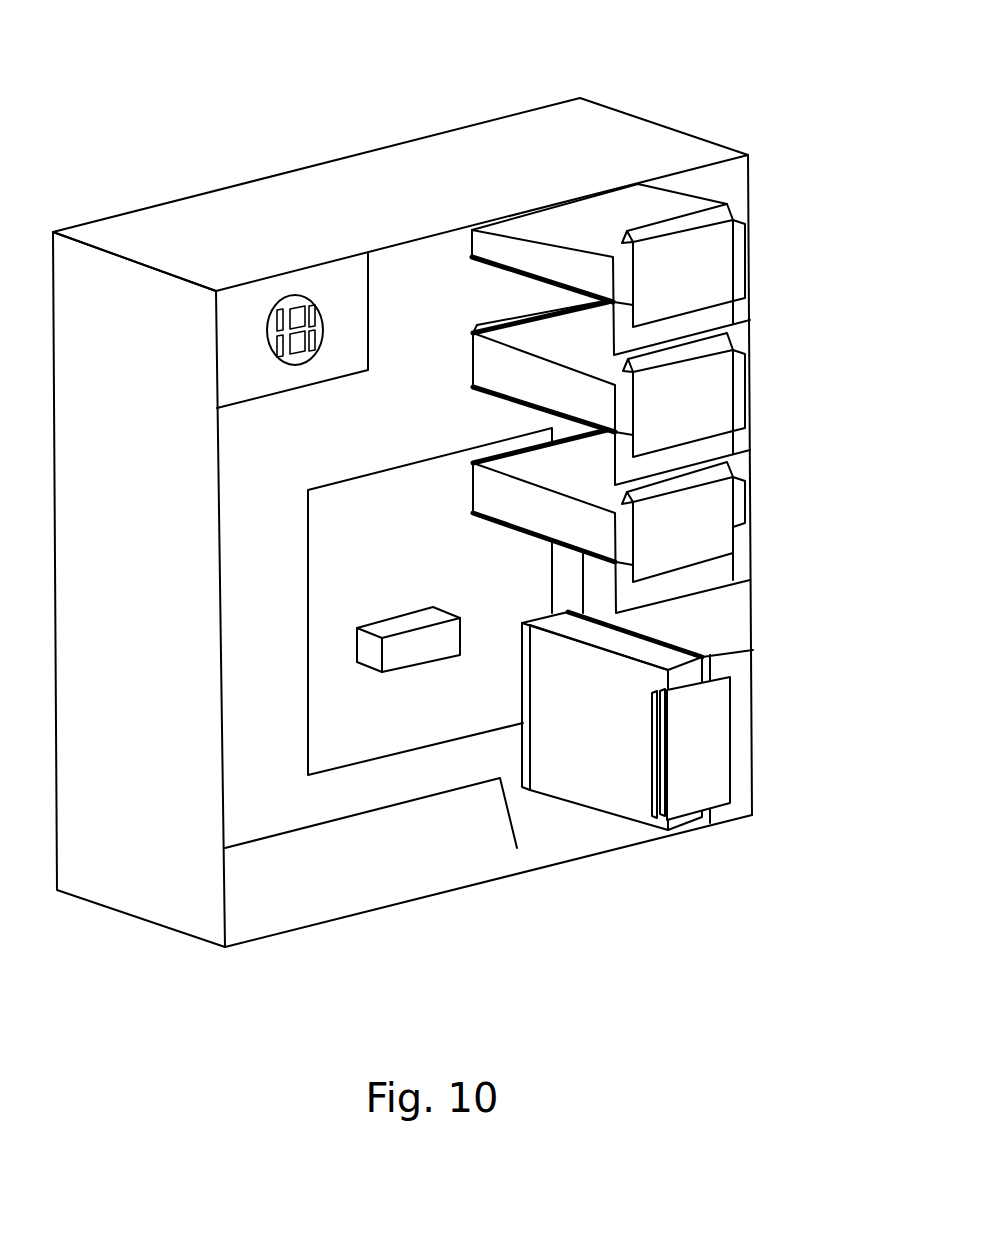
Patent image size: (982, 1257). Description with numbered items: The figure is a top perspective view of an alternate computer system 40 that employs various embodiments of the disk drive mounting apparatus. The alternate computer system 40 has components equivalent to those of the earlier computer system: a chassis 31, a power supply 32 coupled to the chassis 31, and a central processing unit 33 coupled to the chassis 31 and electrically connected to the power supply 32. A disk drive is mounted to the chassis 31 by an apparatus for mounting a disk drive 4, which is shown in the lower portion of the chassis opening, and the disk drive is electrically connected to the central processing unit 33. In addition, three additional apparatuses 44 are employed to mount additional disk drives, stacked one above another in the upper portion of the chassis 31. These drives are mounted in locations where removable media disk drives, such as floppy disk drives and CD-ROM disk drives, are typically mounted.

The alternate computer system 40 is at (468, 503).
The chassis 31 is at (752, 185).
The power supply 32 is at (325, 292).
The central processing unit 33 is at (417, 648).
The additional apparatuses 44 is at (693, 292).
The apparatus for mounting a disk drive 4 is at (705, 733).